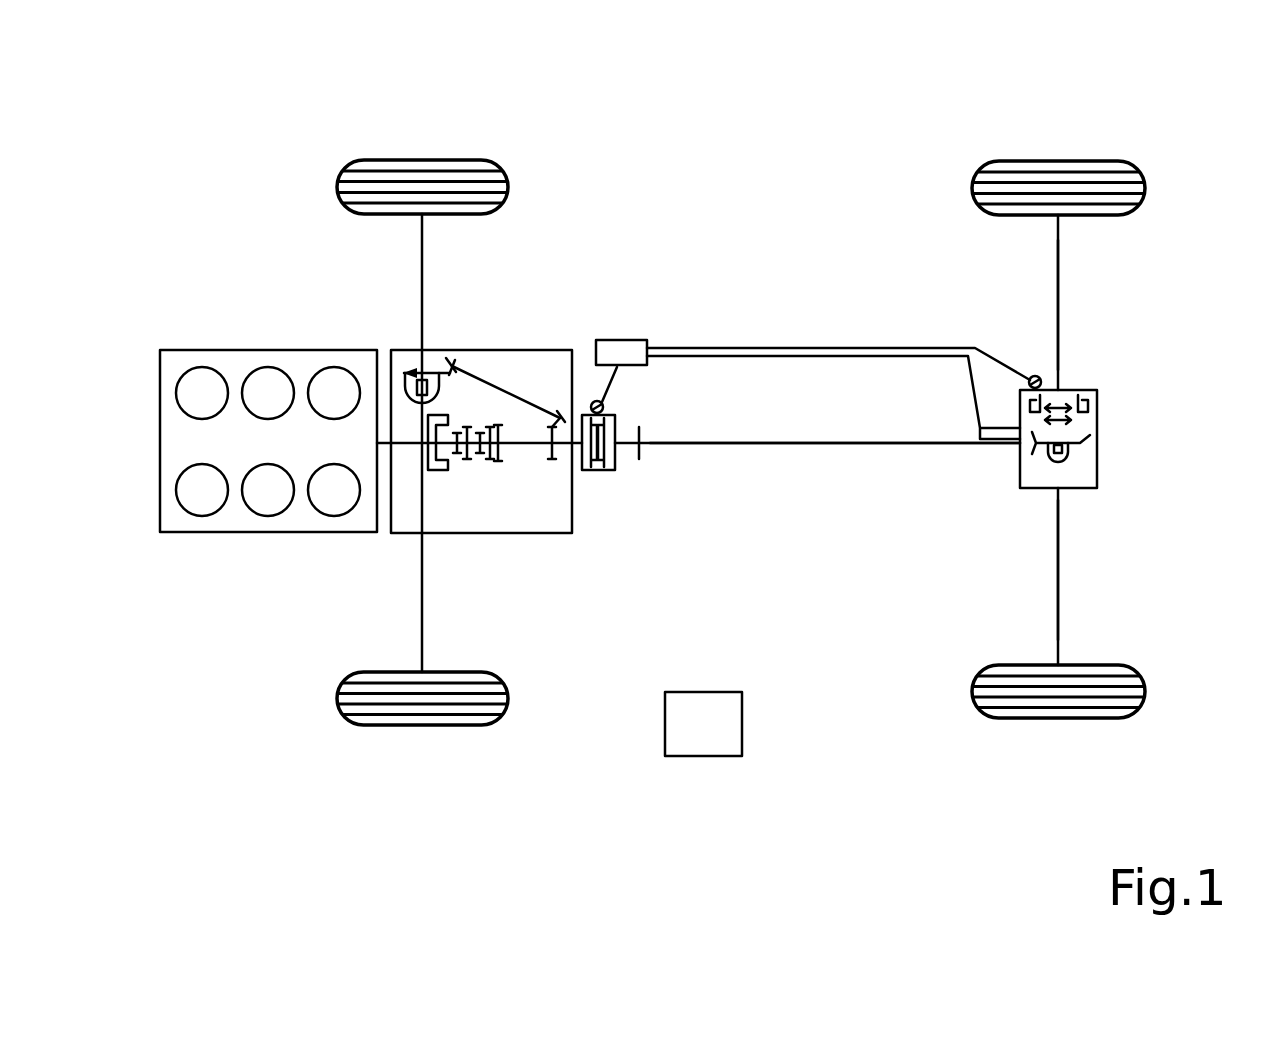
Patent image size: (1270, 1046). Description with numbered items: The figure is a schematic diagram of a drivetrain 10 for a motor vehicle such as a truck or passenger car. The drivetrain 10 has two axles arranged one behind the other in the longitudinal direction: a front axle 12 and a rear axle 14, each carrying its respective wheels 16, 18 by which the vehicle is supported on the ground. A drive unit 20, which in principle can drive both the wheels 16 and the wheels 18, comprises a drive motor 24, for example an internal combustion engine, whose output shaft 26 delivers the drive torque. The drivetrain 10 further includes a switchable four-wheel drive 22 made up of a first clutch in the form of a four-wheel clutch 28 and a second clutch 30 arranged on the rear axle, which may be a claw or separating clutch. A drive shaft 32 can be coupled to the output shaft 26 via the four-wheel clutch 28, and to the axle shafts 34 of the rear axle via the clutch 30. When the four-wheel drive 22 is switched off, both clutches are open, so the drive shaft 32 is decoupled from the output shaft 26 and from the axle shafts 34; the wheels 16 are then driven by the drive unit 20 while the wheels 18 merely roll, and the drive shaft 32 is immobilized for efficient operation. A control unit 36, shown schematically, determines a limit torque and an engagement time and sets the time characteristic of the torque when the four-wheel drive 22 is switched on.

The drivetrain 10 is at (1168, 142).
The front axle 12 is at (416, 807).
The rear axle 14 is at (1025, 790).
The front wheels 16 is at (415, 173).
The rear wheels 18 is at (1047, 174).
The drive unit 20 is at (568, 565).
The four-wheel drive 22 is at (1150, 330).
The drive motor 24 is at (229, 519).
The output shaft 26 is at (413, 445).
The four-wheel clutch 28 is at (625, 498).
The second clutch 30 is at (1108, 512).
The drive shaft 32 is at (850, 446).
The axle shafts 34 is at (1060, 272).
The control unit 36 is at (705, 757).